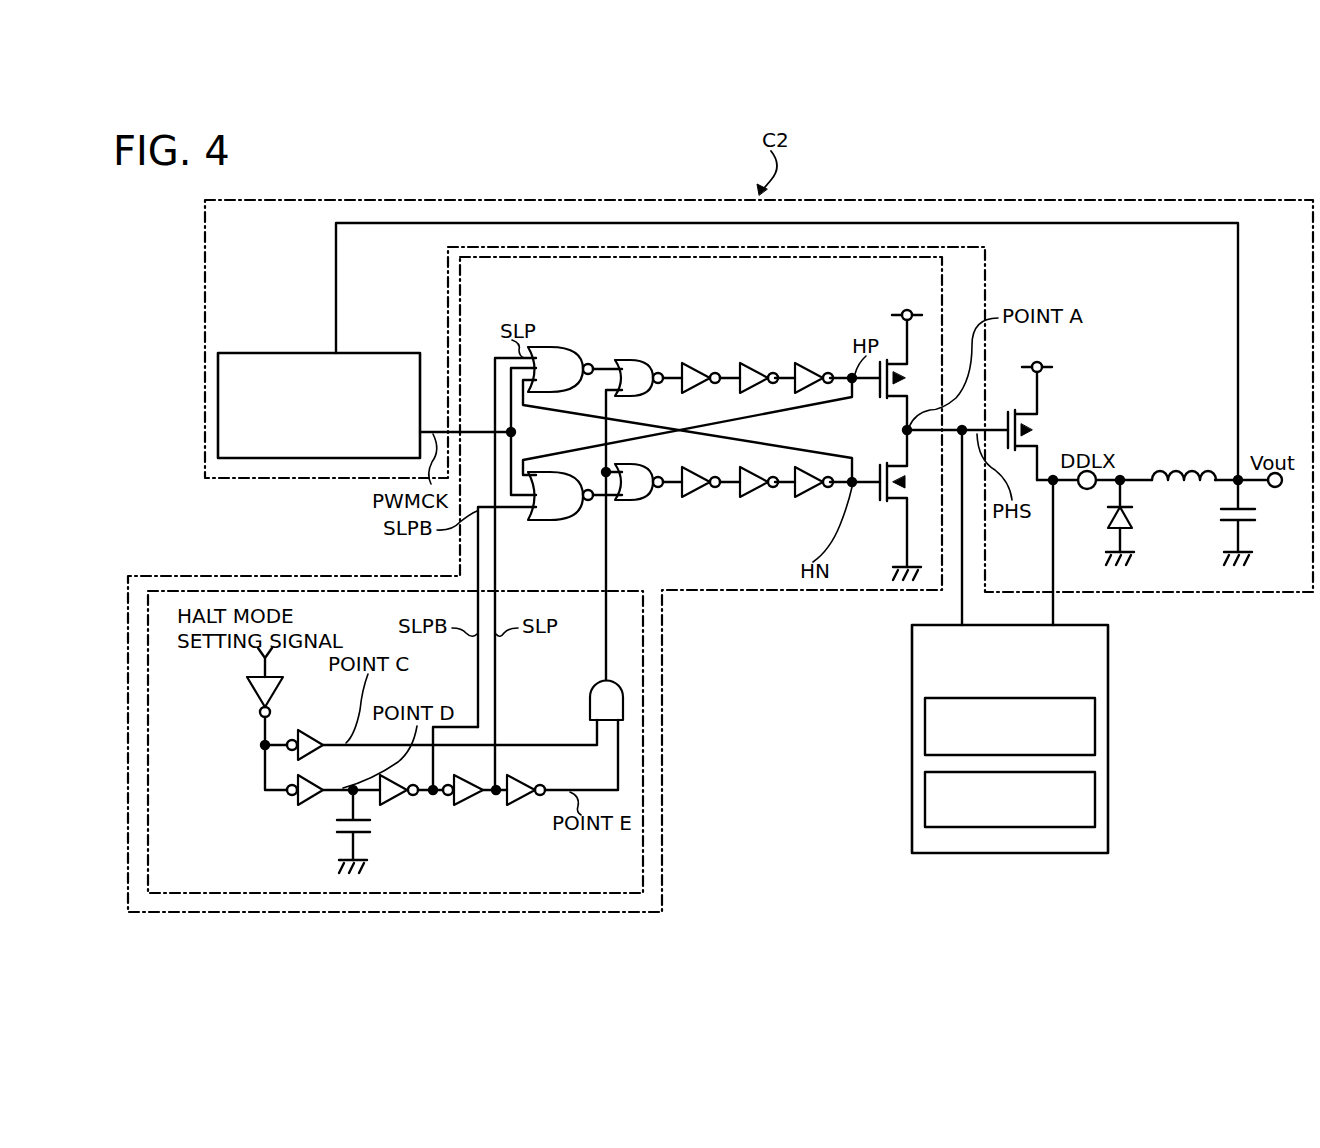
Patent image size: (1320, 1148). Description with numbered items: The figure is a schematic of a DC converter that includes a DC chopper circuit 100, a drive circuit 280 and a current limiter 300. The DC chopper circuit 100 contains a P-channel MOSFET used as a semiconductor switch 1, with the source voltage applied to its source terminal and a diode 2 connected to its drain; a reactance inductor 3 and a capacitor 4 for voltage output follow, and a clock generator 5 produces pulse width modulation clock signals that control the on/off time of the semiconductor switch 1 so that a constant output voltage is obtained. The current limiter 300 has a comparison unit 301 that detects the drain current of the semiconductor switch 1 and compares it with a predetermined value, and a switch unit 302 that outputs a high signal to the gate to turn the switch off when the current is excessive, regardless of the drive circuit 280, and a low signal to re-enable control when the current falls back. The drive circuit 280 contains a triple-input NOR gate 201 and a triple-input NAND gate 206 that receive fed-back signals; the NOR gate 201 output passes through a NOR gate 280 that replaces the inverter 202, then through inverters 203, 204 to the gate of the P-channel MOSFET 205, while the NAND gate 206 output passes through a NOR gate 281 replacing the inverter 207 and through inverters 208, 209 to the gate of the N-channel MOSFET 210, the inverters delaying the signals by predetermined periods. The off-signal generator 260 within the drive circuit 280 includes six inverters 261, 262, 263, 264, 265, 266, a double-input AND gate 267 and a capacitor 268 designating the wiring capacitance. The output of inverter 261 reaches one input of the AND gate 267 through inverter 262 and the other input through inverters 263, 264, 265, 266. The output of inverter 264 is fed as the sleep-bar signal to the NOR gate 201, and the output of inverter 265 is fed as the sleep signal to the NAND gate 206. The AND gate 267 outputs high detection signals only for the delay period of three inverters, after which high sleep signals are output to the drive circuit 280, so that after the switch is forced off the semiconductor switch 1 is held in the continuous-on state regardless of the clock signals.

The DC chopper circuit 100 is at (1281, 201).
The clock generator 5 is at (230, 352).
The drive circuit 280 is at (639, 358).
The triple-input NOR gate 201 is at (600, 341).
The triple-input NAND gate 206 is at (554, 522).
The NOR gate 281 is at (651, 503).
The inverter 202 is at (694, 362).
The inverter 203 is at (752, 362).
The inverter 204 is at (808, 362).
The inverter 207 is at (697, 498).
The inverter 208 is at (754, 498).
The inverter 209 is at (810, 498).
The P-channel type MOSFET (pMOS) 205 is at (879, 400).
The N-channel type MOSFET (nMOS) 210 is at (879, 503).
The semiconductor switch 1 is at (1037, 435).
The diode 2 is at (1133, 521).
The reactance inductor 3 is at (1184, 467).
The capacitor 4 is at (1258, 515).
The current limiter 300 is at (1040, 739).
The comparison unit 301 is at (1010, 726).
The switch unit 302 is at (1010, 799).
The off-signal generator 260 is at (645, 846).
The inverter 261 is at (248, 697).
The inverter 262 is at (313, 730).
The inverter 263 is at (302, 805).
The inverter 264 is at (402, 807).
The inverter 265 is at (465, 807).
The inverter 266 is at (517, 807).
The double-input AND gate 267 is at (596, 684).
The capacitor 268 is at (340, 826).